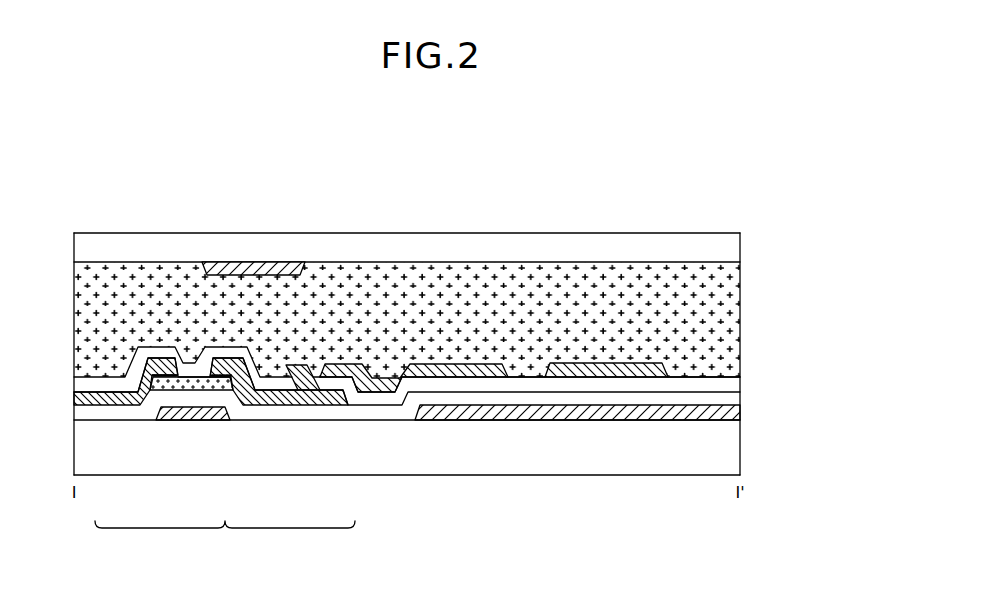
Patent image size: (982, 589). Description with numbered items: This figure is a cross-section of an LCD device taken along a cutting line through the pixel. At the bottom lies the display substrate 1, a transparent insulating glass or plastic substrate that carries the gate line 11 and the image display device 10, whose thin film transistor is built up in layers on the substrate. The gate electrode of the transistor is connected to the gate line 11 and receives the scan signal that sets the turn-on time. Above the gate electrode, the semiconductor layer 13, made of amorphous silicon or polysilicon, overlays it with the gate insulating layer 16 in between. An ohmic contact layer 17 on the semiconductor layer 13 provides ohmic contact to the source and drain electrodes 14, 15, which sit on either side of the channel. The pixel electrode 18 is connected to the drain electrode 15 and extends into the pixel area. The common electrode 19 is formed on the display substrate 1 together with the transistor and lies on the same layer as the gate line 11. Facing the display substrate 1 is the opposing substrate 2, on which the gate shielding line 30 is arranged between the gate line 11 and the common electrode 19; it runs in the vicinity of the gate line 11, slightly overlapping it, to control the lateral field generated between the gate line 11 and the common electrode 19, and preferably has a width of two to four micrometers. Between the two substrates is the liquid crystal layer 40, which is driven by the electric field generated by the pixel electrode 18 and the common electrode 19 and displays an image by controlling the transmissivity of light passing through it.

The display substrate 1 is at (740, 450).
The opposing substrate 2 is at (740, 245).
The image display device 10 is at (225, 538).
The gate line 11 is at (201, 410).
The semiconductor layer 13 is at (168, 388).
The source electrode 14 is at (104, 398).
The drain electrode 15 is at (285, 405).
The gate insulating layer 16 is at (347, 408).
The ohmic contact layer 17 is at (233, 388).
The pixel electrode 18 is at (629, 368).
The common electrode 19 is at (740, 413).
The gate shielding line 30 is at (252, 262).
The liquid crystal layer 40 is at (740, 316).